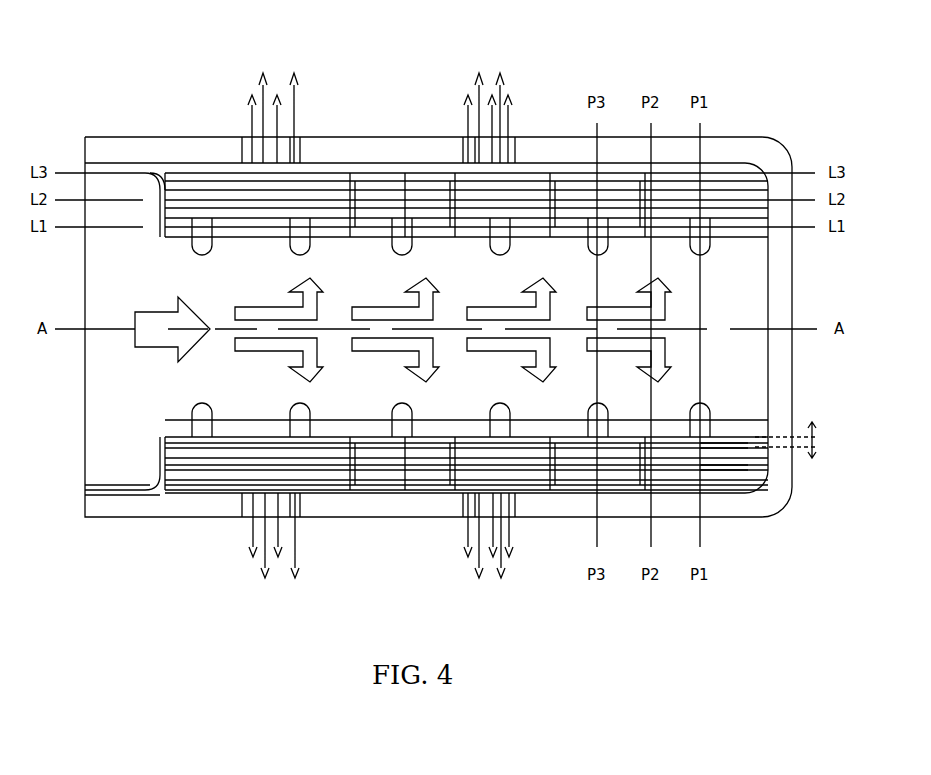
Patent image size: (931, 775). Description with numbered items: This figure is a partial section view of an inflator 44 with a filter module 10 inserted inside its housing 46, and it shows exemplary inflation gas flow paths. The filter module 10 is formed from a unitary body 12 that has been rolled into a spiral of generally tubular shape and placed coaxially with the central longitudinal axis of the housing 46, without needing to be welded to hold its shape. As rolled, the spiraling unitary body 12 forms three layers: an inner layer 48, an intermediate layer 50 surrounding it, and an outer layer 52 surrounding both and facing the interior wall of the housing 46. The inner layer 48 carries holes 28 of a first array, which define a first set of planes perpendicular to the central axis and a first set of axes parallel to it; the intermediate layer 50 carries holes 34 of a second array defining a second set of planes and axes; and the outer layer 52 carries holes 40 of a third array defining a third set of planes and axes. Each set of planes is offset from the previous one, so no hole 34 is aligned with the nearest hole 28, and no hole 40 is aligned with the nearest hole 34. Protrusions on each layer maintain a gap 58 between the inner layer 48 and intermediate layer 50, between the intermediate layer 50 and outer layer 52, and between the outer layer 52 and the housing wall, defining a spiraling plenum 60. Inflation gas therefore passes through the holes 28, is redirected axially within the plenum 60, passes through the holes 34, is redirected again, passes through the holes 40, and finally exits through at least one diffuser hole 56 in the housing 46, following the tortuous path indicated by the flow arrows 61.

The filter module 10 is at (172, 394).
The unitary body 12 is at (758, 292).
The holes of the first array of holes 28 is at (205, 252).
The holes of the second array of holes 34 is at (352, 240).
The holes of the third array of holes 40 is at (190, 160).
The inflator 44 is at (145, 95).
The housing 46 is at (745, 150).
The inner layer 48 is at (814, 420).
The intermediate layer 50 is at (747, 450).
The outer layer 52 is at (747, 472).
The diffuser hole 56 is at (300, 140).
The gap 58 is at (760, 430).
The spiraling plenum 60 is at (165, 447).
The flow arrows 61 is at (300, 110).